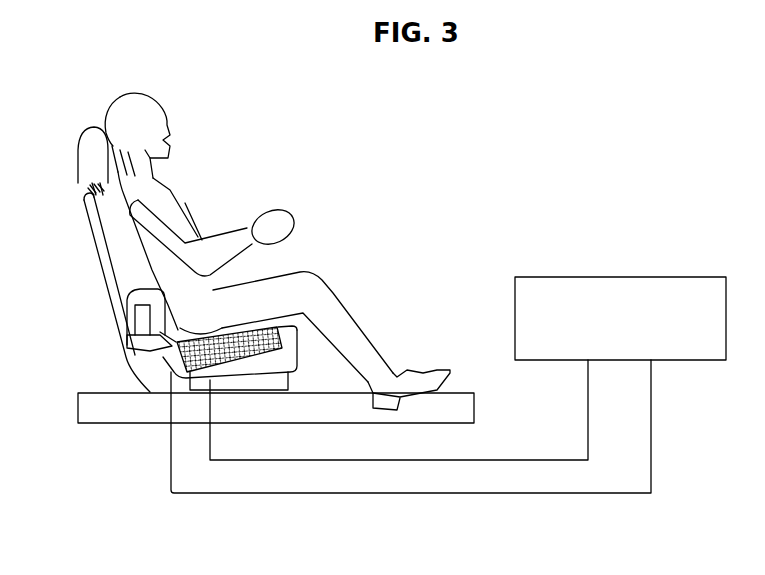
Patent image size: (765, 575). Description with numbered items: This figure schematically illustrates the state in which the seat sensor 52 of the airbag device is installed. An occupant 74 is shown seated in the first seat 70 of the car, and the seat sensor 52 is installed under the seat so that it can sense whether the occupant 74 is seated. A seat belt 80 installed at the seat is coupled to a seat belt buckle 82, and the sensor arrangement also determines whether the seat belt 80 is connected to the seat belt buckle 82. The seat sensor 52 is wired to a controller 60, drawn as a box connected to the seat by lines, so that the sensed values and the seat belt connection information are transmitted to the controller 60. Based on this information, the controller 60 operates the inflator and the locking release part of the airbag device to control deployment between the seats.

The seat sensor 52 is at (187, 373).
The controller 60 is at (613, 277).
The first seat 70 is at (103, 225).
The occupant 74 is at (170, 187).
The seat belt 80 is at (130, 289).
The seat belt buckle 82 is at (130, 336).